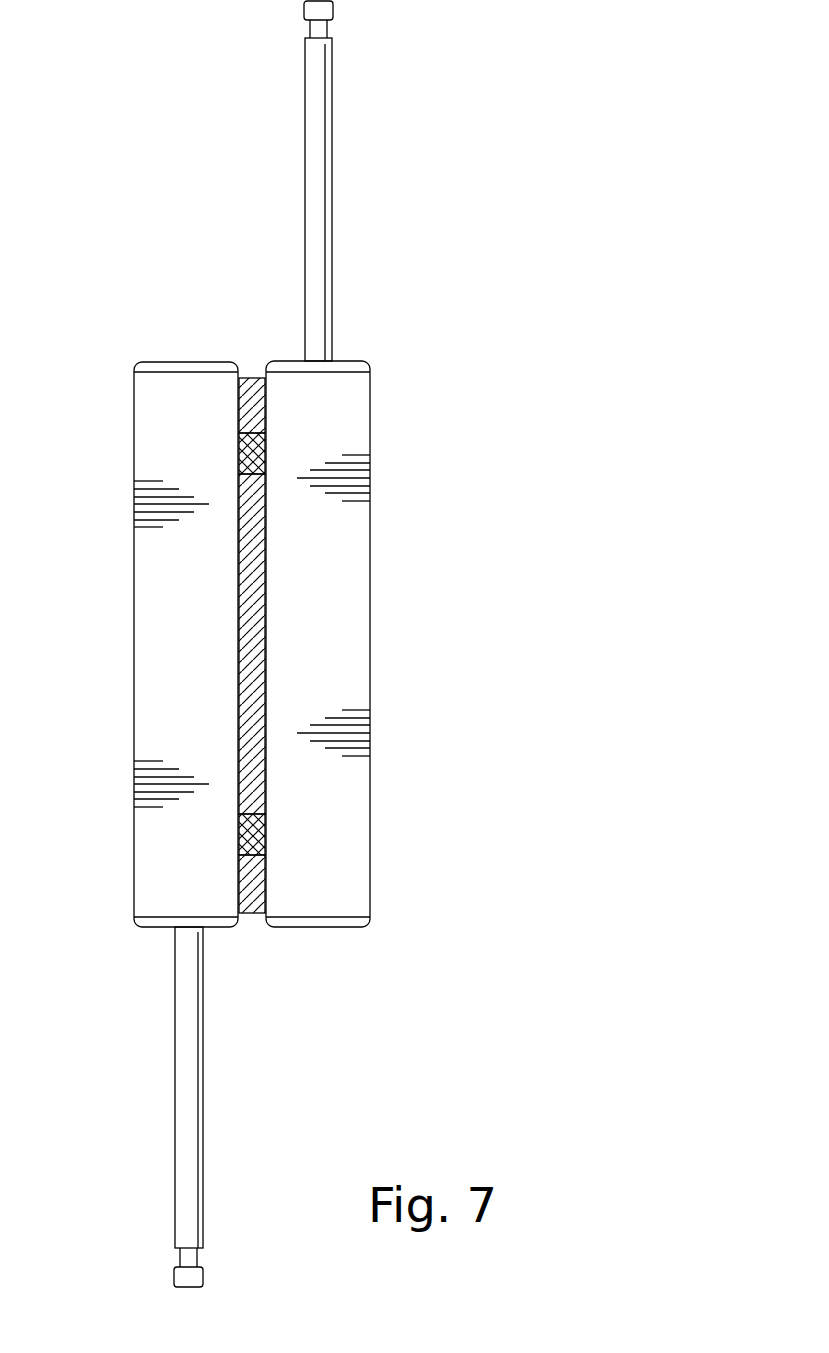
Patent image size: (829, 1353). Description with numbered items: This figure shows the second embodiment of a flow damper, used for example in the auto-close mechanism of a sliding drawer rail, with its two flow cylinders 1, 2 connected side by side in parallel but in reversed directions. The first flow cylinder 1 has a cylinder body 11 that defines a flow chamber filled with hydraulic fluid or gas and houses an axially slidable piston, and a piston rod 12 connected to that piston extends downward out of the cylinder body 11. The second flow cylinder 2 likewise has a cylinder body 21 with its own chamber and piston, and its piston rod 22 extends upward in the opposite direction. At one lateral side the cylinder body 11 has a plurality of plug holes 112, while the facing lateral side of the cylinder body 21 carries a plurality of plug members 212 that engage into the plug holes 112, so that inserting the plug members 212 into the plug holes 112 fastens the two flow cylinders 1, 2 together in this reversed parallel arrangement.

The flow cylinder 1 is at (123, 824).
The cylinder body 11 is at (134, 646).
The piston rod 12 is at (175, 1122).
The plug holes 112 is at (252, 433).
The flow cylinder 2 is at (368, 464).
The cylinder body 21 is at (371, 565).
The piston rod 22 is at (332, 149).
The plug members 212 is at (254, 466).